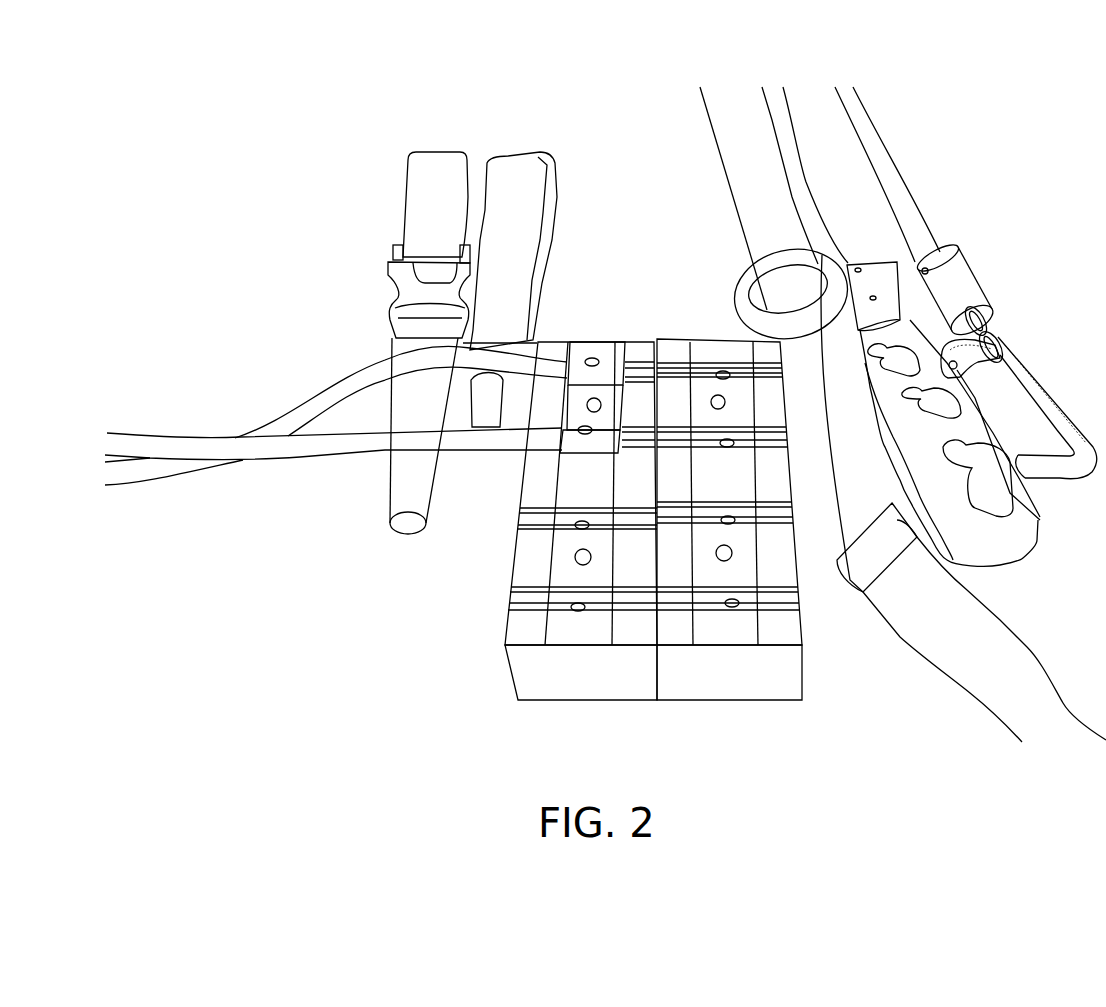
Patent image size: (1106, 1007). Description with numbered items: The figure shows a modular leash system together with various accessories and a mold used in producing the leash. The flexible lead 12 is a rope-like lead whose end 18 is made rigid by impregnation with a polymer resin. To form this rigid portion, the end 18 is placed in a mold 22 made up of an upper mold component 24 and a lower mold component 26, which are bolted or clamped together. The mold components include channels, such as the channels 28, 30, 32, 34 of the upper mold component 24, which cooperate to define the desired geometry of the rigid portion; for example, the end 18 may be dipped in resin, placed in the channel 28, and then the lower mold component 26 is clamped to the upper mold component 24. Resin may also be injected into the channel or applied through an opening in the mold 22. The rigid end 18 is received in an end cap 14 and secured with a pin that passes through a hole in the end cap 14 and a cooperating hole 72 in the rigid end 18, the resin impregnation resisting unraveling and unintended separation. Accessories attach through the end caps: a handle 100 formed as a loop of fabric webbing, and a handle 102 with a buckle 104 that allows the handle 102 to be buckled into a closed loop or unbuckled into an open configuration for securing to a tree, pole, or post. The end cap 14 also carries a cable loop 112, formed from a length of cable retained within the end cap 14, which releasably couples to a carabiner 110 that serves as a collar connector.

The flexible lead 12 is at (306, 460).
The end cap 14 is at (960, 266).
The end of flexible lead 18 is at (612, 346).
The mold 22 is at (661, 557).
The upper mold component 24 is at (788, 557).
The lower mold component 26 is at (600, 714).
The channel 28 is at (787, 373).
The channel 30 is at (790, 441).
The channel 32 is at (793, 509).
The channel 34 is at (800, 606).
The cooperating hole 72 is at (590, 356).
The handle 100 is at (512, 162).
The handle 102 is at (445, 160).
The buckle 104 is at (388, 265).
The carabiner 110 is at (1040, 390).
The cable loop 112 is at (977, 322).